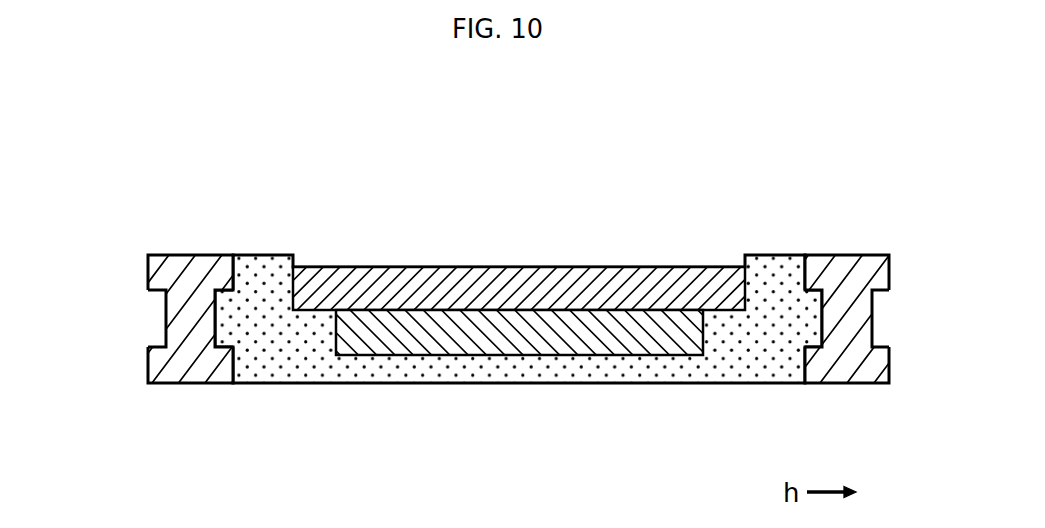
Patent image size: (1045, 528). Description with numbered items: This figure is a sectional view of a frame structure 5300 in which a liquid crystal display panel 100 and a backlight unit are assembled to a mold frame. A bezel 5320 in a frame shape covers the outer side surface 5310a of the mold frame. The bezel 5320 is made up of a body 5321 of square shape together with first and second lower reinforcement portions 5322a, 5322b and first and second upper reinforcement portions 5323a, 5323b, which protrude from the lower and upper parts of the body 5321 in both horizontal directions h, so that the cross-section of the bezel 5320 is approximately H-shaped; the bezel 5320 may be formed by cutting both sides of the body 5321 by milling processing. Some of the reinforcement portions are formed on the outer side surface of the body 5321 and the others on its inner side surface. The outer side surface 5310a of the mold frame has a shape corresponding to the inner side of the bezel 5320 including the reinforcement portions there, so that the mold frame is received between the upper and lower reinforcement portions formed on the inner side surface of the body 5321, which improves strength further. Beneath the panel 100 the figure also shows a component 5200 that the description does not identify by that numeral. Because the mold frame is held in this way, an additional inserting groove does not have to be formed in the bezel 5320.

The frame structure 5300 is at (693, 164).
The body 5321 is at (179, 276).
The outer side surface of the mold frame 5310a is at (206, 293).
The first upper reinforcement portion 5323a is at (148, 270).
The first lower reinforcement portion 5322a is at (131, 364).
The bezel 5320 is at (841, 316).
The second upper reinforcement portion 5323b is at (795, 268).
The second lower reinforcement portion 5322b is at (817, 368).
The liquid crystal display panel 100 is at (538, 285).
The lower plate / substrate 5200 is at (505, 338).